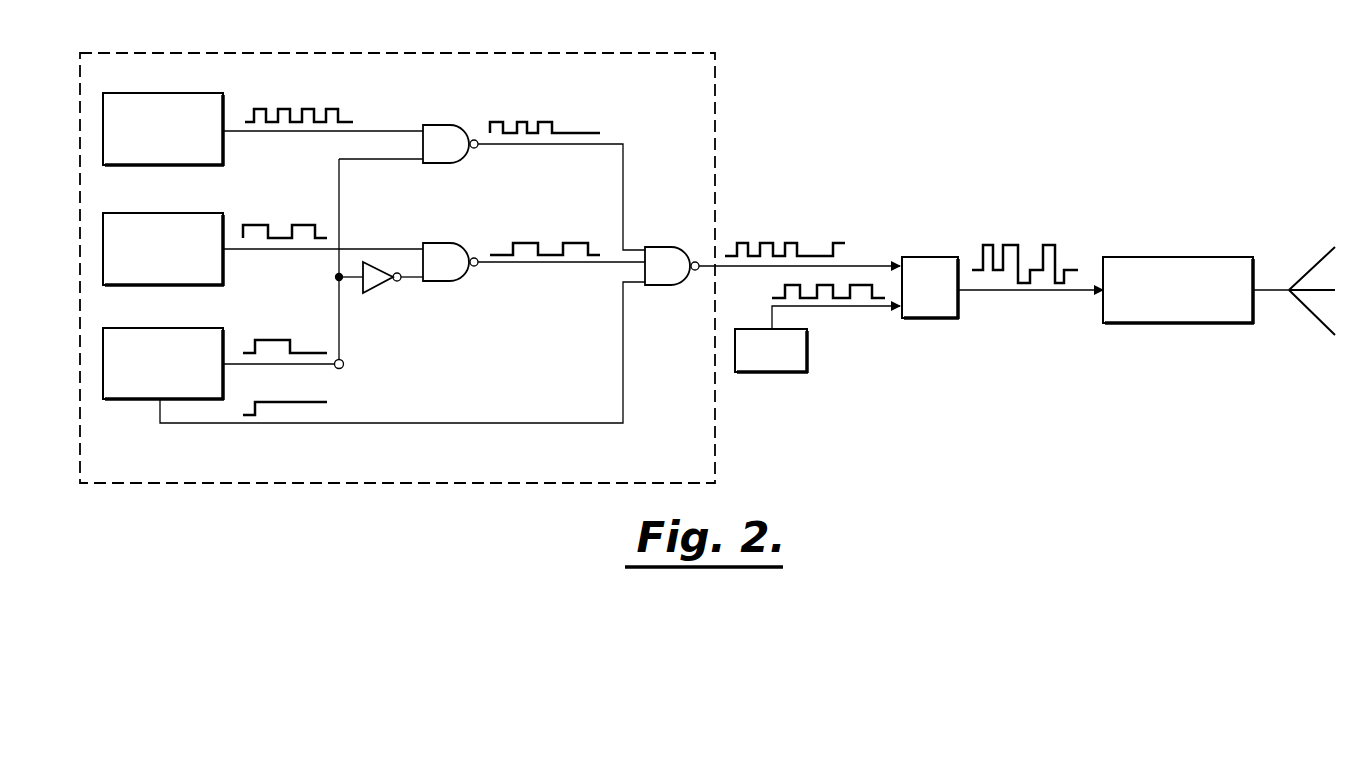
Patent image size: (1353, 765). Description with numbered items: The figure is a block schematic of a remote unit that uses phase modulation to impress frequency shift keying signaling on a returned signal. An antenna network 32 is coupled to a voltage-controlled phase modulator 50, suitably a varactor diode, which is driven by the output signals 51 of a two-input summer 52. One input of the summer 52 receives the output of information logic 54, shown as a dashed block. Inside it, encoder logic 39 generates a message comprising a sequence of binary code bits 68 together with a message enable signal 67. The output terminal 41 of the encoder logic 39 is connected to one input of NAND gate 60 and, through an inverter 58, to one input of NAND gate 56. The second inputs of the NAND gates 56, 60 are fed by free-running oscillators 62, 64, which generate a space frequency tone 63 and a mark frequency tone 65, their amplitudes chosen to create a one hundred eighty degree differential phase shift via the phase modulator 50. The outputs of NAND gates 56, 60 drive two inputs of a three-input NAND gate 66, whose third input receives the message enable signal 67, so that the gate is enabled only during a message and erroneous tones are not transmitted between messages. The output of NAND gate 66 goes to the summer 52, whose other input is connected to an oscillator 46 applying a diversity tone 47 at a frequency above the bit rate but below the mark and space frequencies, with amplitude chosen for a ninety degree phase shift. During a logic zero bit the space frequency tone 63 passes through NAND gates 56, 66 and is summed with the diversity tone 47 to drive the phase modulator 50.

The antenna network 32 is at (1318, 255).
The encoder logic 39 is at (160, 328).
The output terminal 41 is at (343, 362).
The oscillator 46 is at (808, 352).
The diversity tone 47 is at (779, 289).
The phase modulator 50 is at (1182, 257).
The output signals 51 is at (1012, 245).
The summer 52 is at (925, 256).
The information logic 54 is at (690, 463).
The NAND gate 56 is at (445, 242).
The inverter 58 is at (374, 292).
The NAND gate 60 is at (445, 123).
The oscillator 62 is at (160, 213).
The space frequency tone 63 is at (260, 225).
The oscillator 64 is at (163, 93).
The mark frequency tone 65 is at (307, 109).
The NAND gate 66 is at (661, 247).
The message enable signal 67 is at (287, 402).
The code bits 68 is at (278, 340).